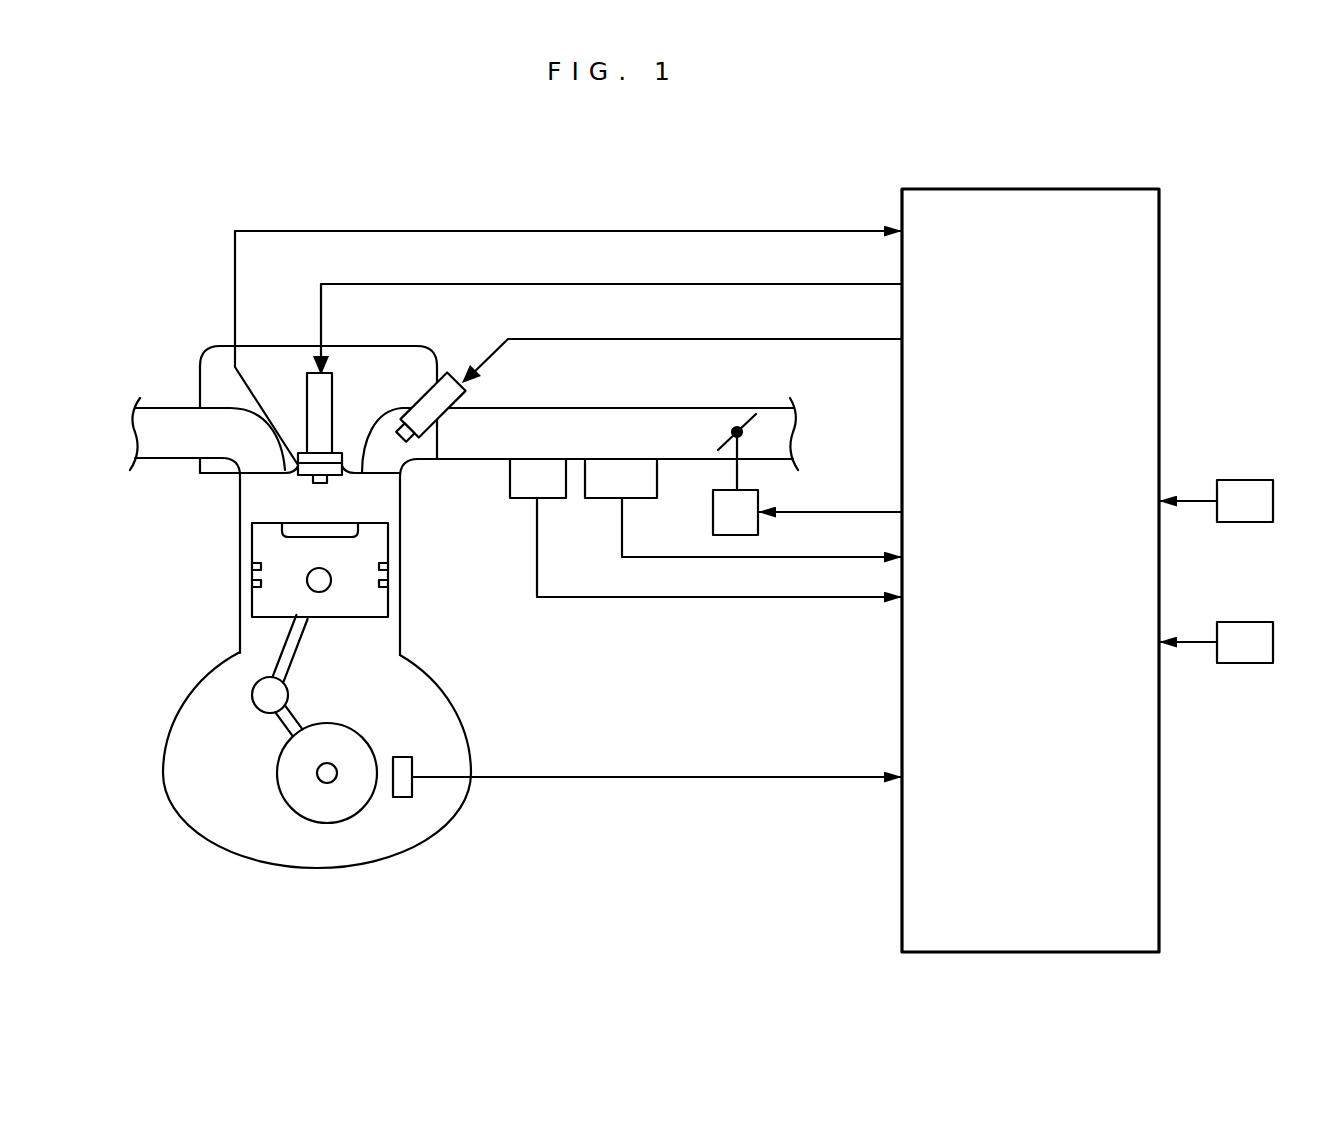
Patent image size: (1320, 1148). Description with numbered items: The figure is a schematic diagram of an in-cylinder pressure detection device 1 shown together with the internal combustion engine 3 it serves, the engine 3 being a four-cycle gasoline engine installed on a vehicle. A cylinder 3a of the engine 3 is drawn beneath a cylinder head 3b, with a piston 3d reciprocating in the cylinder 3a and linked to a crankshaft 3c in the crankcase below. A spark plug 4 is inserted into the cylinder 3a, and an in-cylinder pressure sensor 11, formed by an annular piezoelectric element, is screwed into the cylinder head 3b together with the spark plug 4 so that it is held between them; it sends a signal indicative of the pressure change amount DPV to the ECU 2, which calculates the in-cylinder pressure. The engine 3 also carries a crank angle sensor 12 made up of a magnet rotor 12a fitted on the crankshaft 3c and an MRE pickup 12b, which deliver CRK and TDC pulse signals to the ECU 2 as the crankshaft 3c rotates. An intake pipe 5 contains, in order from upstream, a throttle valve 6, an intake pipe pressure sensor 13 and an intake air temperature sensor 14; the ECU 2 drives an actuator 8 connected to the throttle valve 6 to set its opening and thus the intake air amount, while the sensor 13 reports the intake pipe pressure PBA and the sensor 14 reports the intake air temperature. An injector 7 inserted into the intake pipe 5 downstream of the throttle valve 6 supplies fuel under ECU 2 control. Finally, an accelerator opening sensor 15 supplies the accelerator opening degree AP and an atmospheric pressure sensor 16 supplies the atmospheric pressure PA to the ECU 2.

The in-cylinder pressure detection device 1 is at (1212, 168).
The ECU 2 is at (1160, 280).
The internal combustion engine 3 is at (204, 846).
The cylinder 3a is at (240, 503).
The cylinder head 3b is at (215, 372).
The crankshaft 3c is at (337, 773).
The piston 3d is at (275, 602).
The spark plug 4 is at (315, 372).
The intake pipe 5 is at (554, 407).
The throttle valve 6 is at (748, 418).
The injector 7 is at (441, 378).
The actuator 8 is at (713, 508).
The in-cylinder pressure sensor 11 is at (336, 452).
The crank angle sensor 12 is at (355, 840).
The magnet rotor 12a is at (347, 822).
The MRE pickup 12b is at (402, 797).
The intake pipe pressure sensor 13 is at (606, 500).
The intake air temperature sensor 14 is at (510, 488).
The accelerator opening sensor 15 is at (1238, 522).
The atmospheric pressure sensor 16 is at (1238, 663).